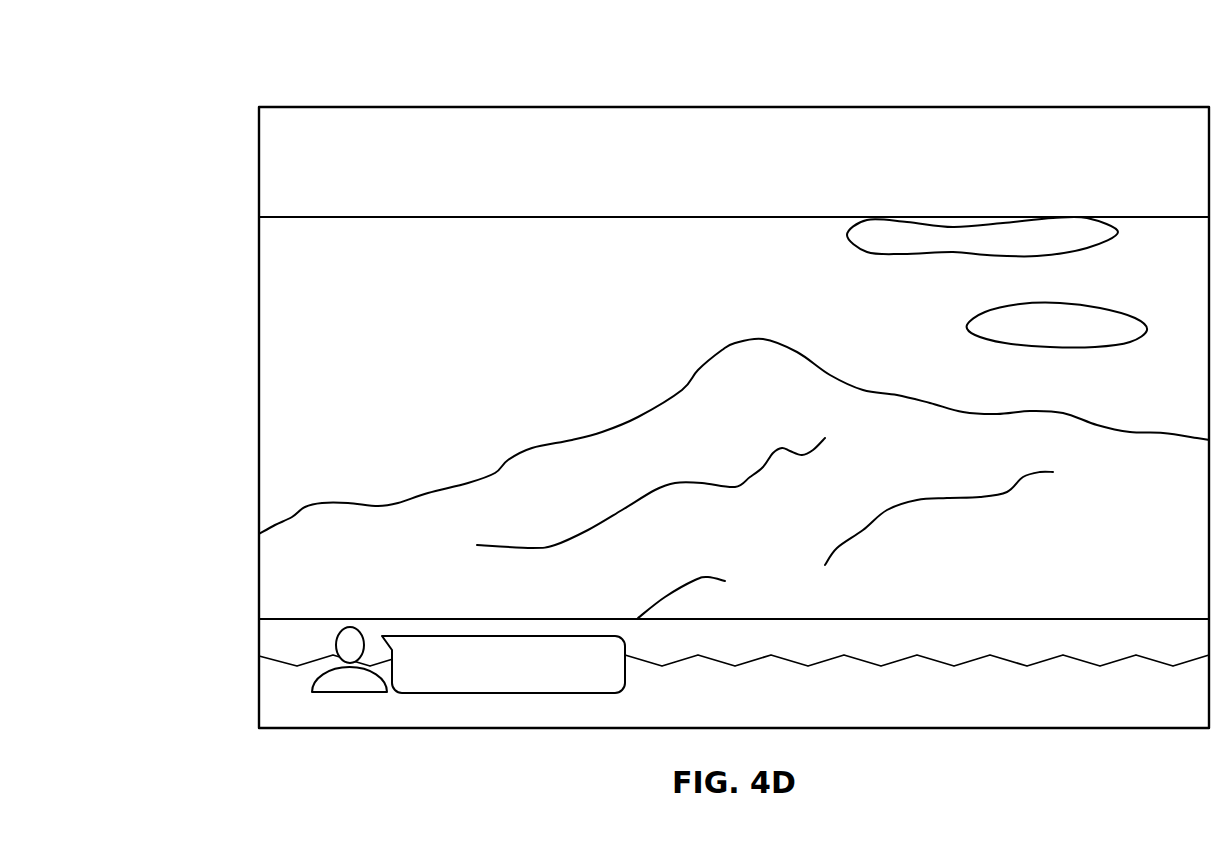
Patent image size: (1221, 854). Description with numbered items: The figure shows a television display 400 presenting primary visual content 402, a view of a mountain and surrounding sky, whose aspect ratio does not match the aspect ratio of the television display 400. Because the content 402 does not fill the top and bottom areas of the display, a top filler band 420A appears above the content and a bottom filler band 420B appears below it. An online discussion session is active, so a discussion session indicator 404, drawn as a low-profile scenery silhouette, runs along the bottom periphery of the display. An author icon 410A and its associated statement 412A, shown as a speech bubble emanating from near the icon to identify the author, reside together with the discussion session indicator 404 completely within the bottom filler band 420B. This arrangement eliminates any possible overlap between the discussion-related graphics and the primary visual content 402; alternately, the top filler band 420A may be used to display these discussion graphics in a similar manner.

The television display 400 is at (917, 107).
The primary visual content 402 is at (350, 253).
The discussion session indicator 404 is at (662, 708).
The author icon 410A is at (320, 683).
The statement 412A is at (441, 693).
The top filler band 420A is at (513, 143).
The bottom filler band 420B is at (1136, 637).